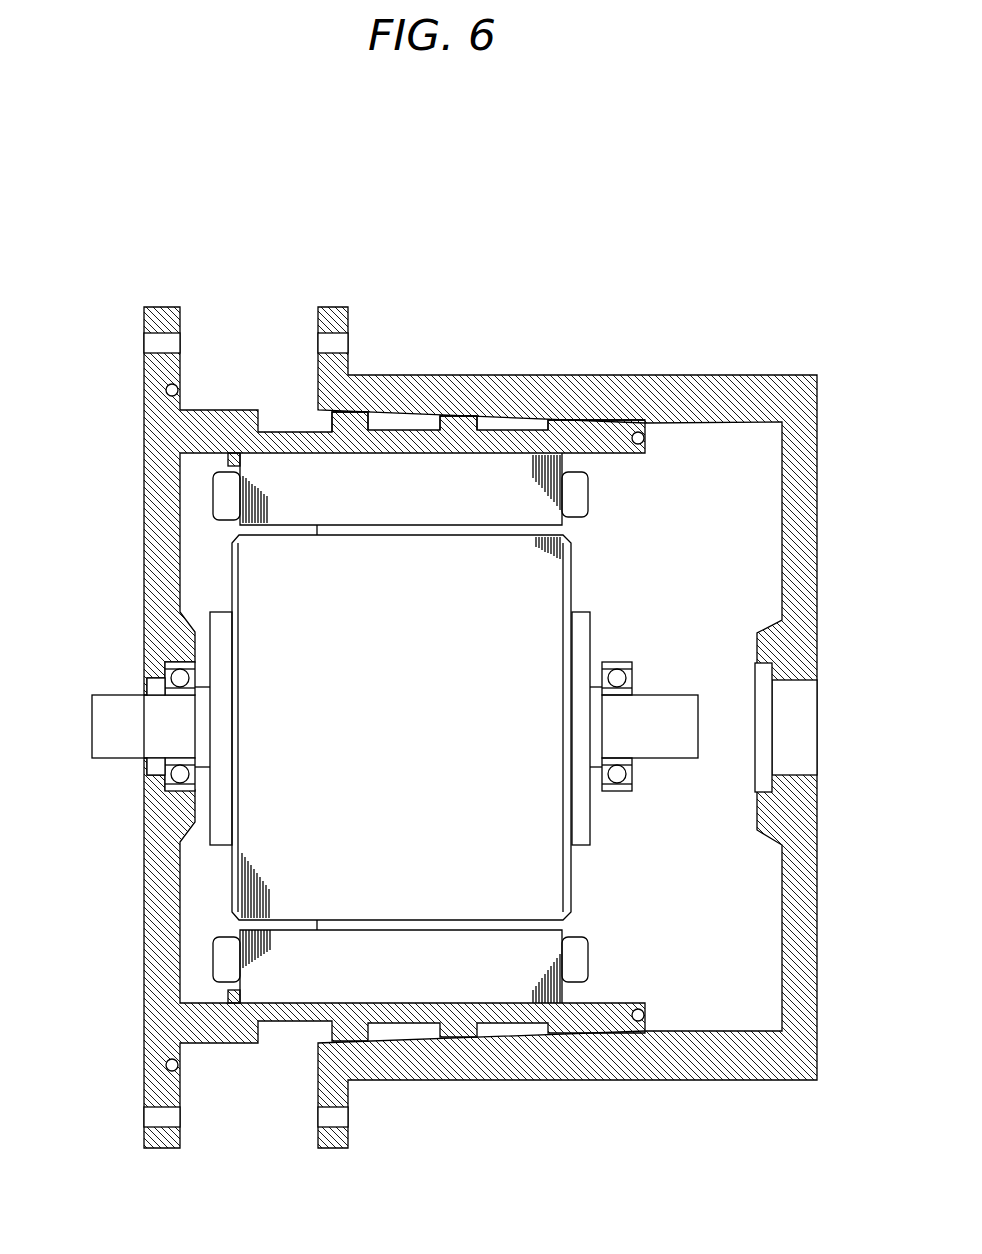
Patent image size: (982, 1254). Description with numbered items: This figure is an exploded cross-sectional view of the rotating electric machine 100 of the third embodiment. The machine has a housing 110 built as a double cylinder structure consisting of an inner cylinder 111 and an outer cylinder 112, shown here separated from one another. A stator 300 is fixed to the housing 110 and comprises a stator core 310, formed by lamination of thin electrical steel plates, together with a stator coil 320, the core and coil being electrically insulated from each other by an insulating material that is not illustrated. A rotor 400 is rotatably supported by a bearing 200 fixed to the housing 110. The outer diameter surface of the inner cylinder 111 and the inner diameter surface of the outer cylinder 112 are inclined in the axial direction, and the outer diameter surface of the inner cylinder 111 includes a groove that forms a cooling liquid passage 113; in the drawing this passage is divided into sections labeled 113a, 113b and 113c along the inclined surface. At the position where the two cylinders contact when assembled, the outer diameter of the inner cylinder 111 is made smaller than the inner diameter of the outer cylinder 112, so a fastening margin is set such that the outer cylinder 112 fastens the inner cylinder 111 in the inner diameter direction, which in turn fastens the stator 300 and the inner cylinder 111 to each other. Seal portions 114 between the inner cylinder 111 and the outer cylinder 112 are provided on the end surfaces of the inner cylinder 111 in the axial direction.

The rotating electric machine 100 is at (431, 636).
The housing 110 is at (735, 228).
The inner cylinder 111 is at (596, 438).
The outer cylinder 112 is at (578, 392).
The cooling liquid passage 113 is at (537, 237).
The first protrusion 113a is at (290, 425).
The second protrusion 113b is at (398, 422).
The third protrusion 113c is at (501, 422).
The seal portion 114 is at (166, 395).
The bearing 200 is at (168, 670).
The stator 300 is at (748, 515).
The stator core 310 is at (480, 490).
The stator coil 320 is at (578, 510).
The rotor 400 is at (575, 890).